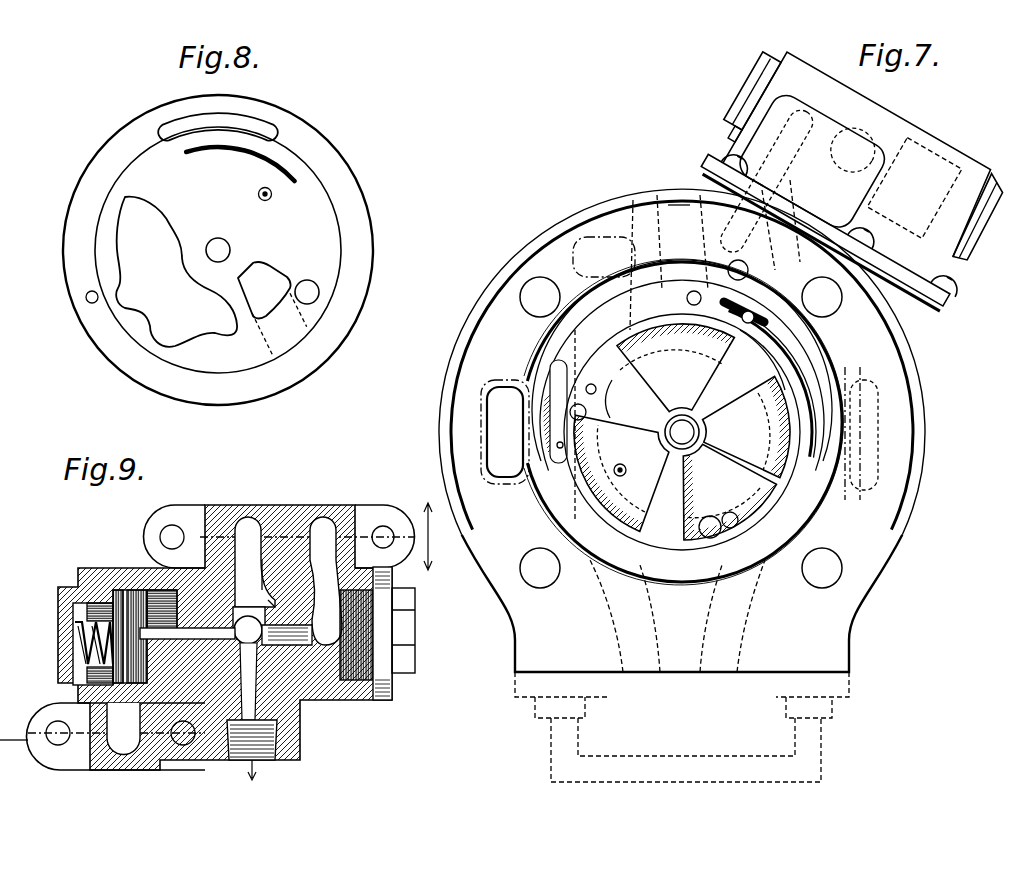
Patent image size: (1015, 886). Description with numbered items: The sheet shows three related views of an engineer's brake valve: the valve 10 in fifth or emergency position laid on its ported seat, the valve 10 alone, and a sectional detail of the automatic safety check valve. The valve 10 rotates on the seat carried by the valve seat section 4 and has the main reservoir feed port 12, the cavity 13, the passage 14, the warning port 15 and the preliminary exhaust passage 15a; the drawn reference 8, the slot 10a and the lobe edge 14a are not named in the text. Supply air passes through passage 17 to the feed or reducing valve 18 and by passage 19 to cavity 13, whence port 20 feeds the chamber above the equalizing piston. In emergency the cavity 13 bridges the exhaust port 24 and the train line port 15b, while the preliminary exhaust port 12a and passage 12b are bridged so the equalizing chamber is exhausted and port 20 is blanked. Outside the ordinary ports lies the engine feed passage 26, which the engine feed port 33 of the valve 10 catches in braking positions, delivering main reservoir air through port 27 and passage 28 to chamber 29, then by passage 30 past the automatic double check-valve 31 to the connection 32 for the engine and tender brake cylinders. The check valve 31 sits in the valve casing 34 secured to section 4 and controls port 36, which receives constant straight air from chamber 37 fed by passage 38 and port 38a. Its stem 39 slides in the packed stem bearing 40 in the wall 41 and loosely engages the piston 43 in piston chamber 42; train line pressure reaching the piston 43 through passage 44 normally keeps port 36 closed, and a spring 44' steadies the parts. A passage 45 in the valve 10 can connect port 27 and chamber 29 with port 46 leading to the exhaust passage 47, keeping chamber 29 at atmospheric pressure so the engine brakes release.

In FIG. 7, the valve seat section 4 is at (895, 538).
In FIG. 7, the casing 8 is at (602, 212).
In FIG. 8, the valve 10 is at (323, 162).
In FIG. 9, the valve 10 is at (228, 633).
In FIG. 7, the cover plate slot 10a is at (873, 433).
In FIG. 8, the main reservoir feed port 12 is at (307, 280).
In FIG. 7, the main reservoir feed port 12 is at (698, 530).
In FIG. 7, the preliminary exhaust port 12a is at (570, 412).
In FIG. 7, the preliminary exhaust passage 12b is at (612, 350).
In FIG. 8, the passage or cavity 13 is at (176, 272).
In FIG. 7, the passage or cavity 13 is at (675, 368).
In FIG. 8, the passage 14 is at (273, 274).
In FIG. 7, the passage 14 is at (685, 492).
In FIG. 7, the lobe edge 14a is at (626, 399).
In FIG. 8, the warning port 15 is at (264, 201).
In FIG. 7, the warning port 15 is at (632, 463).
In FIG. 8, the preliminary exhaust passage 15a is at (226, 158).
In FIG. 7, the preliminary exhaust passage 15a is at (621, 473).
In FIG. 7, the valve passage 15b is at (746, 426).
In FIG. 7, the passage 17 is at (615, 614).
In FIG. 7, the feed or reducing valve 18 is at (682, 727).
In FIG. 7, the passage 19 is at (752, 596).
In FIG. 7, the port 20 is at (737, 516).
In FIG. 7, the exhaust or atmospheric port 24 is at (732, 374).
In FIG. 7, the engine feed passage 26 is at (806, 330).
In FIG. 7, the port 27 is at (790, 318).
In FIG. 7, the passage 28 is at (792, 268).
In FIG. 9, the chamber 29 is at (248, 520).
In FIG. 7, the chamber 29 is at (847, 160).
In FIG. 9, the passage 30 is at (275, 560).
In FIG. 9, the automatic double check-valve 31 is at (280, 591).
In FIG. 9, the connection 32 is at (238, 762).
In FIG. 8, the engine feed port 33 is at (88, 303).
In FIG. 9, the engine feed port 33 is at (232, 610).
In FIG. 7, the engine feed port 33 is at (762, 297).
In FIG. 9, the valve casing 34 is at (210, 500).
In FIG. 7, the valve casing 34 is at (895, 124).
In FIG. 9, the port 36 is at (350, 690).
In FIG. 9, the chamber 37 is at (330, 528).
In FIG. 7, the chamber 37 is at (782, 174).
In FIG. 7, the passage 38 is at (535, 352).
In FIG. 7, the port 38a is at (736, 262).
In FIG. 9, the stem 39 is at (162, 640).
In FIG. 9, the packed stem bearing 40 is at (143, 638).
In FIG. 9, the web or wall 41 is at (190, 590).
In FIG. 9, the piston chamber 42 is at (100, 603).
In FIG. 7, the piston chamber 42 is at (928, 170).
In FIG. 9, the piston 43 is at (125, 590).
In FIG. 9, the passage 44 is at (125, 751).
In FIG. 7, the passage 44 is at (972, 240).
In FIG. 9, the spring 44' is at (60, 643).
In FIG. 7, the passage 45 is at (560, 445).
In FIG. 7, the port 46 is at (686, 298).
In FIG. 7, the exhaust passage 47 is at (670, 205).